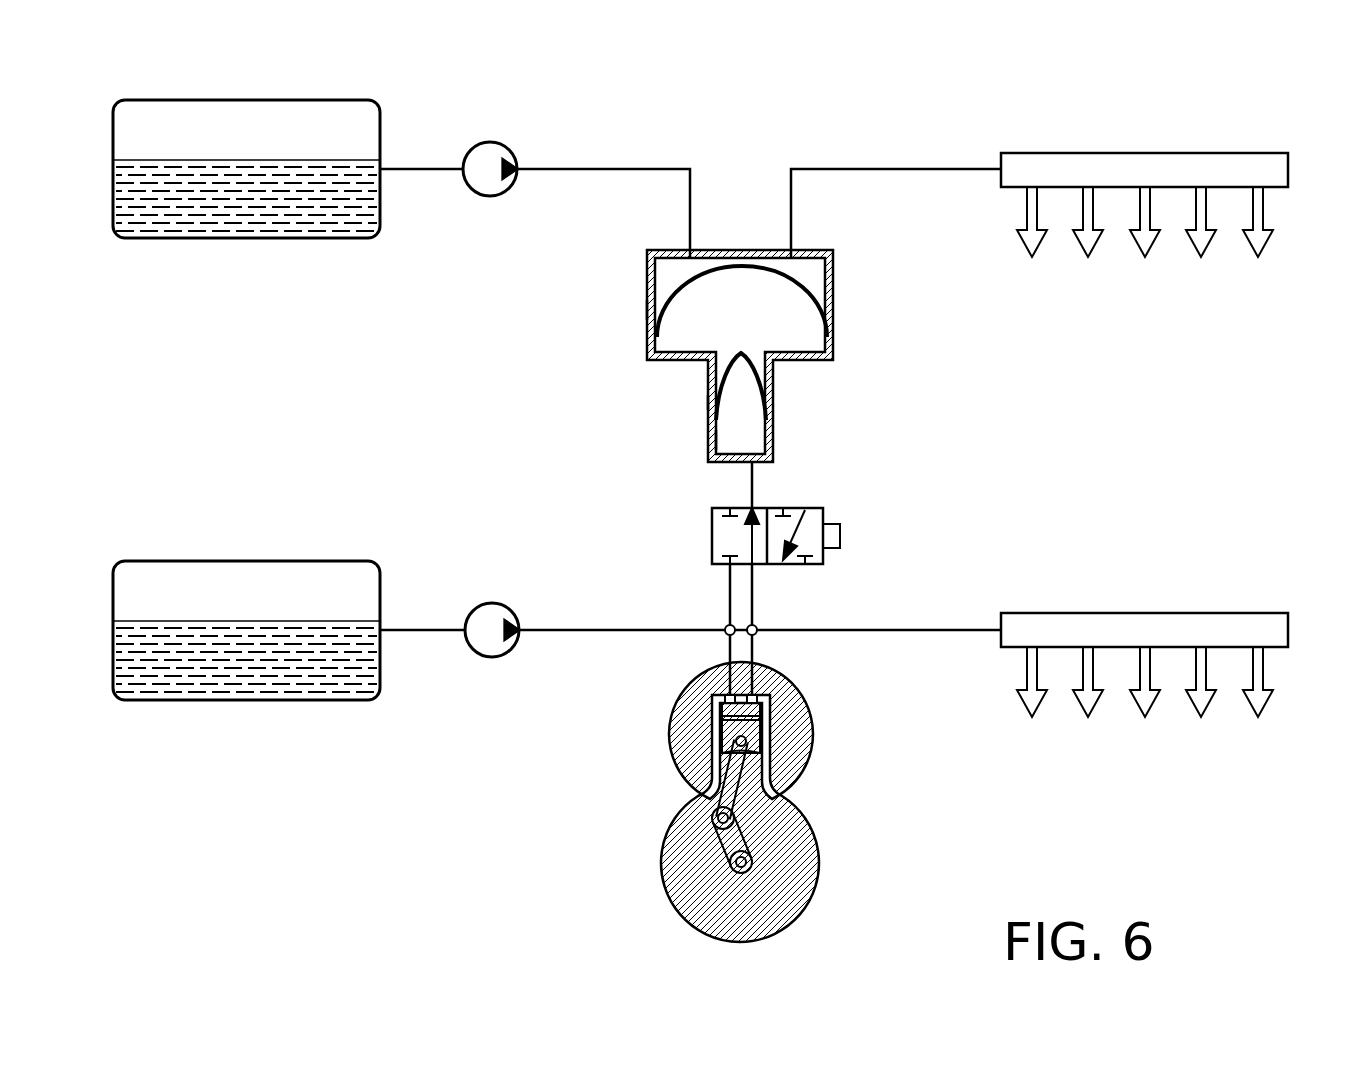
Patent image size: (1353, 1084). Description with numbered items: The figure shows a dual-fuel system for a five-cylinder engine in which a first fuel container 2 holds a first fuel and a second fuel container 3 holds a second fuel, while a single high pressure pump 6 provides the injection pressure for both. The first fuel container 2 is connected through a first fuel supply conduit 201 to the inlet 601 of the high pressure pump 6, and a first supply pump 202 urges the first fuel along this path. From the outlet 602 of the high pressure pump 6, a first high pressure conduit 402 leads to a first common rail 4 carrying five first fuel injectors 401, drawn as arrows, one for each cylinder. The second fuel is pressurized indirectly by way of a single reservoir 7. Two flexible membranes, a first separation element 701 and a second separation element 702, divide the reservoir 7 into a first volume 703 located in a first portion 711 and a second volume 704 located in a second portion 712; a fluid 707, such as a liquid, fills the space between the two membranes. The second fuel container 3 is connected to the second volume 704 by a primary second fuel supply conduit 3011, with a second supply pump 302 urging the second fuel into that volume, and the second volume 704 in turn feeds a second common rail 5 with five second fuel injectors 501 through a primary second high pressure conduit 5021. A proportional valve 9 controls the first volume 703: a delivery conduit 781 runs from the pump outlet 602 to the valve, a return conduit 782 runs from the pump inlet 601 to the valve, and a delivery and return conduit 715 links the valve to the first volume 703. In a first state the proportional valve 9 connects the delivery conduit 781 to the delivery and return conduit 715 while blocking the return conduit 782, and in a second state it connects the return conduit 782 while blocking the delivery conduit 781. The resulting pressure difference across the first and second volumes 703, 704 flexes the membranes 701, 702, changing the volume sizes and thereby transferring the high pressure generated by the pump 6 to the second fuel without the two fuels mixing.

The first fuel container 2 is at (245, 561).
The second fuel container 3 is at (245, 100).
The first common rail 4 is at (1144, 668).
The second common rail 5 is at (1144, 208).
The high pressure pump 6 is at (753, 802).
The reservoir 7 is at (744, 362).
The proportional valve 9 is at (712, 533).
The first fuel supply conduit 201 is at (585, 632).
The first supply pump 202 is at (492, 657).
The second supply pump 302 is at (490, 142).
The first fuel injectors 401 is at (1093, 670).
The first high pressure conduit 402 is at (898, 632).
The second fuel injectors 501 is at (1093, 210).
The inlet 601 is at (729, 696).
The outlet 602 is at (754, 696).
The first separation element 701 is at (719, 365).
The second separation element 702 is at (683, 283).
The first volume 703 is at (743, 423).
The second volume 704 is at (805, 272).
The fluid 707 is at (753, 310).
The first portion 711 is at (709, 402).
The second portion 712 is at (646, 310).
The delivery and return conduit 715 is at (752, 481).
The delivery conduit 781 is at (752, 601).
The return conduit 782 is at (730, 583).
The primary second fuel supply conduit 3011 is at (627, 168).
The primary second high pressure conduit 5021 is at (895, 168).